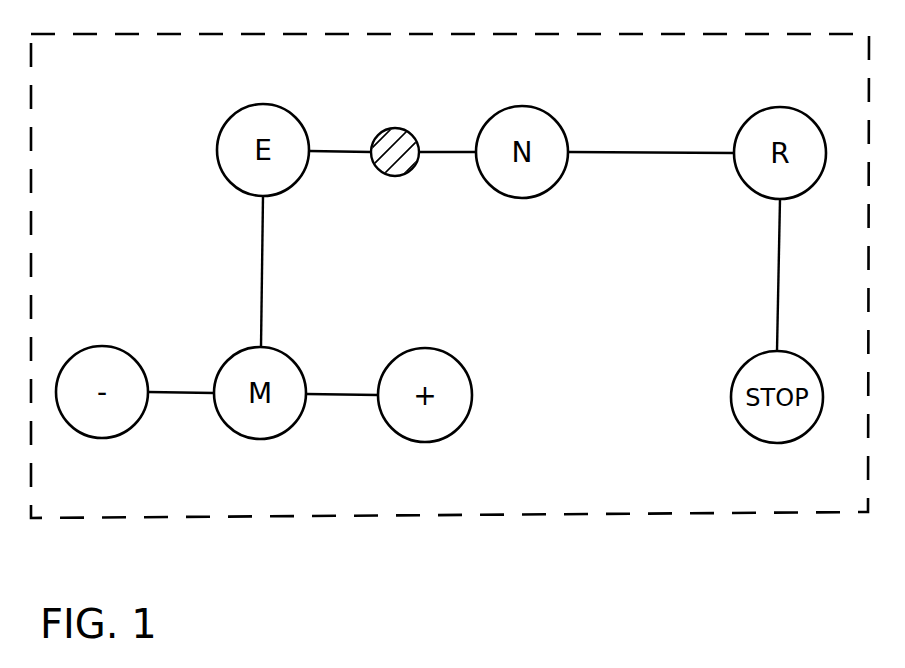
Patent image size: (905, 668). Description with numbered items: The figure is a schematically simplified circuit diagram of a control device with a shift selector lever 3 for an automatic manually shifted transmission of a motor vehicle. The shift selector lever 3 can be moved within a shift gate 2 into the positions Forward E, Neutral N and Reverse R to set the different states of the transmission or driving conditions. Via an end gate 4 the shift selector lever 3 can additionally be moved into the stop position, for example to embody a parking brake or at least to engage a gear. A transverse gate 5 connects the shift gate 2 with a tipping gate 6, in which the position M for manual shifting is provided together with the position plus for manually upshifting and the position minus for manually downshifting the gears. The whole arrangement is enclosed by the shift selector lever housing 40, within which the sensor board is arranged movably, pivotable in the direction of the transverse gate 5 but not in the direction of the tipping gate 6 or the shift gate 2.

The shift gate 2 is at (630, 143).
The shift selector lever 3 is at (385, 140).
The end gate 4 is at (786, 278).
The transverse gate 5 is at (254, 274).
The tipping gate 6 is at (179, 402).
The shift selector lever housing 40 is at (400, 518).